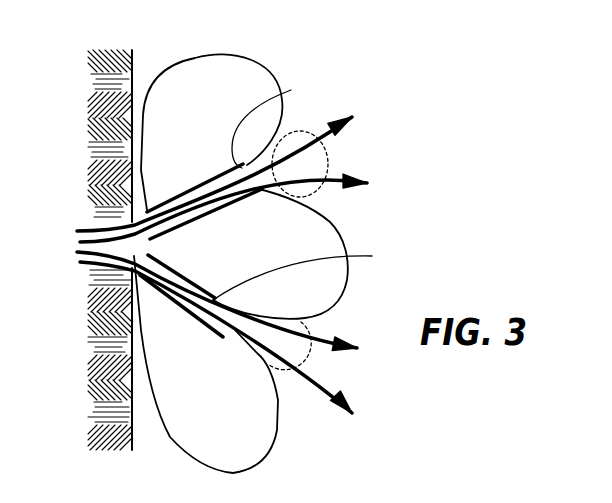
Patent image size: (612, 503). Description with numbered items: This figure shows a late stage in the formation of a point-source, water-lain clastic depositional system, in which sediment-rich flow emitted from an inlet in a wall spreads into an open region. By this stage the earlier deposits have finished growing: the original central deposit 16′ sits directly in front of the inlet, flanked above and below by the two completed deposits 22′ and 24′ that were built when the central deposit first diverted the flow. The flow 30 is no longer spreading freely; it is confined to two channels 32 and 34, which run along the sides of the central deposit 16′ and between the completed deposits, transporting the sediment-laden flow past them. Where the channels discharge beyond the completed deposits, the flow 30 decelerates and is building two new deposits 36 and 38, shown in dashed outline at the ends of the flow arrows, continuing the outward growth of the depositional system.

The completed deposit 16′ is at (343, 219).
The completed deposit 22′ is at (268, 70).
The completed deposit 24′ is at (268, 457).
The flow 30 is at (327, 128).
The channel 32 is at (275, 122).
The channel 34 is at (304, 270).
The deposit 36 is at (328, 154).
The deposit 38 is at (310, 324).